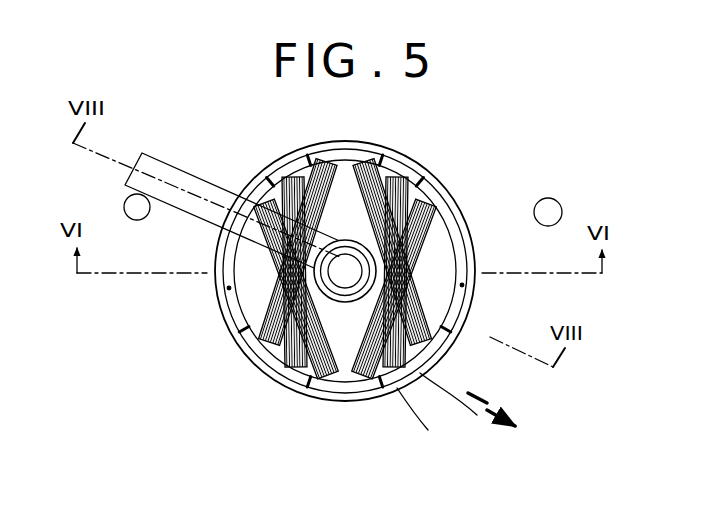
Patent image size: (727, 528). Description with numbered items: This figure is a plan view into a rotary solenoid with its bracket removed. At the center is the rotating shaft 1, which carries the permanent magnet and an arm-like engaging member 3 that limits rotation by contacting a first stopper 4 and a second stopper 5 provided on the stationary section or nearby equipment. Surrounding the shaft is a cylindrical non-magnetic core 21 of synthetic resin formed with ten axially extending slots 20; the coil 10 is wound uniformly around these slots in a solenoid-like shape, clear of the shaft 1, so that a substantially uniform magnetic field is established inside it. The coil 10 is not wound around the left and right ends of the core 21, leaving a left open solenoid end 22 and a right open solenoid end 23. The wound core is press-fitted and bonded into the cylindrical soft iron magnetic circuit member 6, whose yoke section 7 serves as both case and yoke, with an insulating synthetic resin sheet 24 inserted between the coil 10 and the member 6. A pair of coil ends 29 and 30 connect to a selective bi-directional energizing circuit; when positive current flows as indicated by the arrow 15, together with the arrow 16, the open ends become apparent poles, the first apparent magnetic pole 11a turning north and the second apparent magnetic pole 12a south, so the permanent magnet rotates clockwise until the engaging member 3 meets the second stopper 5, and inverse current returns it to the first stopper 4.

The rotating shaft 1 is at (260, 352).
The engaging member 3 is at (186, 171).
The first stopper 4 is at (144, 218).
The second stopper 5 is at (537, 200).
The magnetic circuit member 6 is at (282, 386).
The yoke section 7 is at (310, 387).
The coil 10 is at (350, 380).
The first apparent magnetic pole 11a is at (229, 288).
The second apparent magnetic pole 12a is at (462, 285).
The arrow 15 is at (487, 402).
The arrow 16 is at (493, 421).
The slots 20 is at (343, 157).
The non-magnetic core 21 is at (335, 290).
The left open solenoid end 22 is at (314, 278).
The right open solenoid end 23 is at (447, 307).
The insulating synthetic resin sheet 24 is at (258, 183).
The coil end 29 is at (450, 396).
The coil end 30 is at (410, 414).